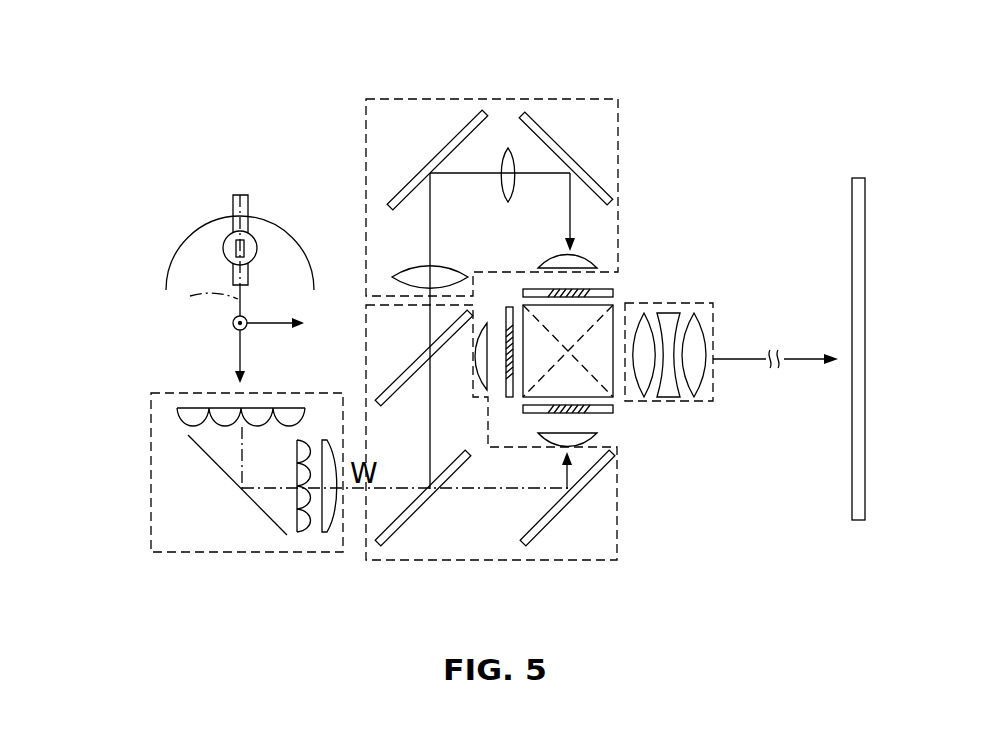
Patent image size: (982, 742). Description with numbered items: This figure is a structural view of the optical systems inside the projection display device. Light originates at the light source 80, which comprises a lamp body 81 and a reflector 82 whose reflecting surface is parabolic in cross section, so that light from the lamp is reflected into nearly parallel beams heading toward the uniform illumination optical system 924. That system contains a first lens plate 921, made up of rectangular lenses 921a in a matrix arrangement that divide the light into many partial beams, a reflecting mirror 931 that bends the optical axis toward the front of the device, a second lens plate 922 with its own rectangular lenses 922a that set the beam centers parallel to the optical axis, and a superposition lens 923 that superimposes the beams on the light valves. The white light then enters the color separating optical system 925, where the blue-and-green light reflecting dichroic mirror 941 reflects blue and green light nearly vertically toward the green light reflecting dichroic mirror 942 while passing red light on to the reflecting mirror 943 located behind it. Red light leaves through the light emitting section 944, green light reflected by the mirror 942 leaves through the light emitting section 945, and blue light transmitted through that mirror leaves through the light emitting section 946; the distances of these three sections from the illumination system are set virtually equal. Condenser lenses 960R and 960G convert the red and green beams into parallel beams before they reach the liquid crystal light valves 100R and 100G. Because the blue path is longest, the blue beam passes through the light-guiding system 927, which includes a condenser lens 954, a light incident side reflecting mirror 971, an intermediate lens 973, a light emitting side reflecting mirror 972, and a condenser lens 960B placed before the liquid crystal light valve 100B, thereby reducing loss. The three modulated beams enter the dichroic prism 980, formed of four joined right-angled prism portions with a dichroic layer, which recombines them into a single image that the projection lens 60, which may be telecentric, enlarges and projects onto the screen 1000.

The light source 80 is at (180, 240).
The lamp body 81 is at (228, 233).
The reflector 82 is at (167, 283).
The first lens plate 921 is at (187, 397).
The rectangular lens 921a is at (178, 412).
The second lens plate 922 is at (298, 537).
The rectangular lens 922a is at (297, 470).
The superposition lens 923 is at (332, 533).
The uniform illumination optical system 924 is at (151, 480).
The color separating optical system 925 is at (617, 560).
The light-guiding system 927 is at (397, 98).
The reflecting mirror 931 is at (257, 505).
The blue-and-green light reflecting dichroic mirror 941 is at (403, 532).
The green light reflecting dichroic mirror 942 is at (461, 357).
The reflecting mirror 943 is at (545, 537).
The light emitting section 944 is at (575, 447).
The light emitting section 945 is at (478, 373).
The light emitting section 946 is at (417, 297).
The condenser lens 954 is at (400, 270).
The condenser lens 960G is at (487, 318).
The condenser lens 960B is at (590, 262).
The condenser lens 960R is at (593, 442).
The liquid crystal light valve 100G is at (508, 315).
The liquid crystal light valve 100B is at (603, 289).
The liquid crystal light valve 100R is at (613, 410).
The light incident side reflecting mirror 971 is at (410, 175).
The light emitting side reflecting mirror 972 is at (573, 157).
The intermediate lens 973 is at (508, 148).
The dichroic prism 980 is at (603, 315).
The projection lens 60 is at (713, 325).
The screen 1000 is at (865, 230).